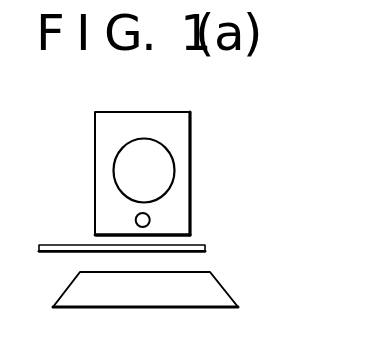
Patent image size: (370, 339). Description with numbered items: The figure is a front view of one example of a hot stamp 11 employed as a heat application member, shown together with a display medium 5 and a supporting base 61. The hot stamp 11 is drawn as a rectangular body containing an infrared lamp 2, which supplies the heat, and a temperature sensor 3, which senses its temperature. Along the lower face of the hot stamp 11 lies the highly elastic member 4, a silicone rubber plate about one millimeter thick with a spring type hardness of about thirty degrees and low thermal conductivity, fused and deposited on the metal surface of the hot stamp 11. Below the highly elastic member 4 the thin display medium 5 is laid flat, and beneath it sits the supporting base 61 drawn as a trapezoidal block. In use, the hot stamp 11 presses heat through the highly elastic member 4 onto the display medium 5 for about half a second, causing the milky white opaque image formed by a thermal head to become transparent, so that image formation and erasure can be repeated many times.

The hot stamp 11 is at (244, 143).
The infrared lamp 2 is at (174, 170).
The temperature sensor 3 is at (150, 219).
The highly elastic member 4 is at (190, 235).
The display medium 5 is at (205, 248).
The supporting base 61 is at (212, 287).